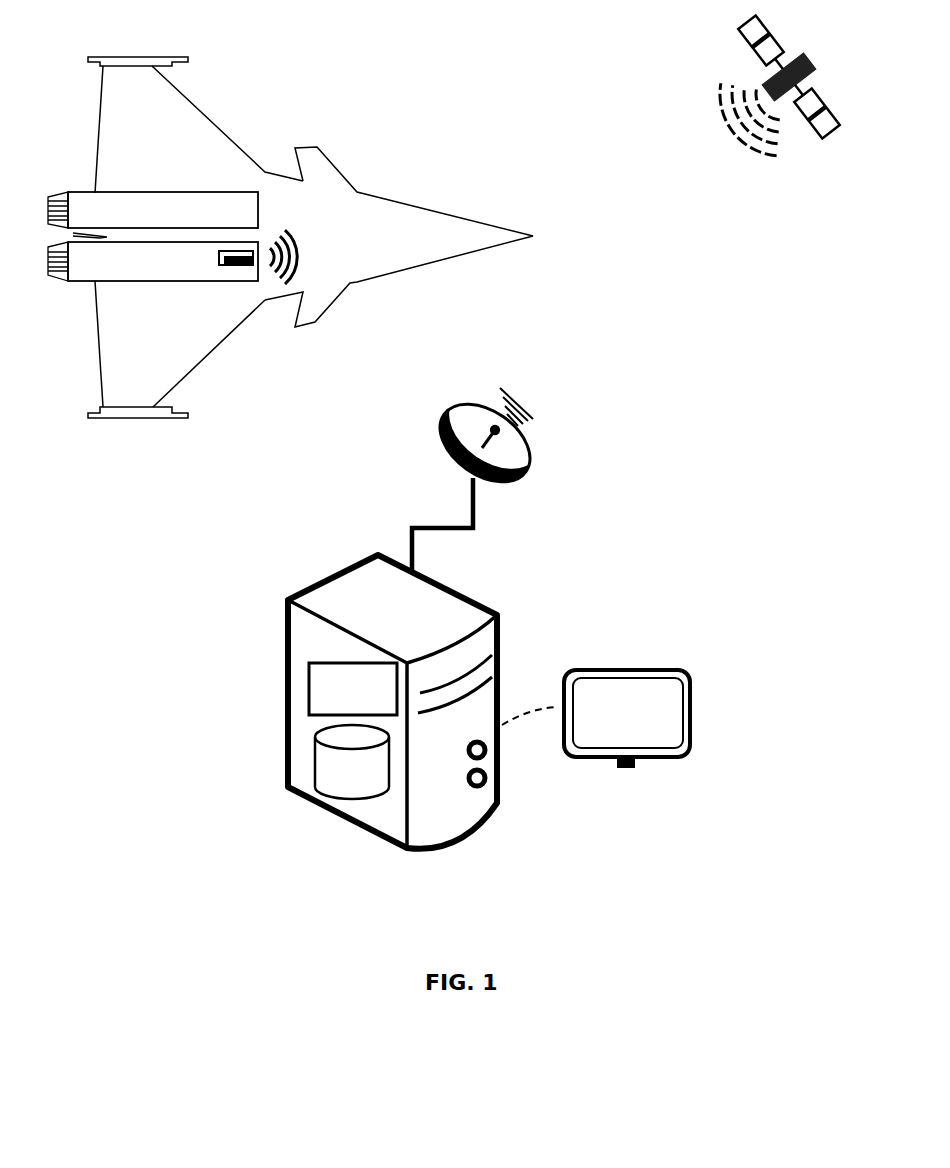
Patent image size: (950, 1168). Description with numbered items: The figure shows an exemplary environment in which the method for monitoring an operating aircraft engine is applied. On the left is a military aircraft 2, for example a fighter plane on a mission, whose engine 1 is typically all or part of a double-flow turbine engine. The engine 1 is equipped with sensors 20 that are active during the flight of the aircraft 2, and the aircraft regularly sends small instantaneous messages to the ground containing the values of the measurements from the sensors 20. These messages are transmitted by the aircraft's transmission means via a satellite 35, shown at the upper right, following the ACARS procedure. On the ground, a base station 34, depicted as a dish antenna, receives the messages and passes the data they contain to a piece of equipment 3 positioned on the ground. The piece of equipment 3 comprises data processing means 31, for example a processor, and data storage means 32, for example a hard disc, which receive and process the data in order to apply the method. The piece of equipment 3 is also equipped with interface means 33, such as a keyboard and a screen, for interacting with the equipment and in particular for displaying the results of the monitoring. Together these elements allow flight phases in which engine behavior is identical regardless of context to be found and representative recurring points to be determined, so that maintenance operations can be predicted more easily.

The engine 1 is at (290, 229).
The aircraft 2 is at (223, 346).
The sensors 20 is at (237, 249).
The piece of equipment 3 is at (311, 705).
The data processing means 31 is at (305, 684).
The data storage means 32 is at (312, 778).
The interface means 33 is at (618, 667).
The base station 34 is at (534, 458).
The satellite 35 is at (785, 98).